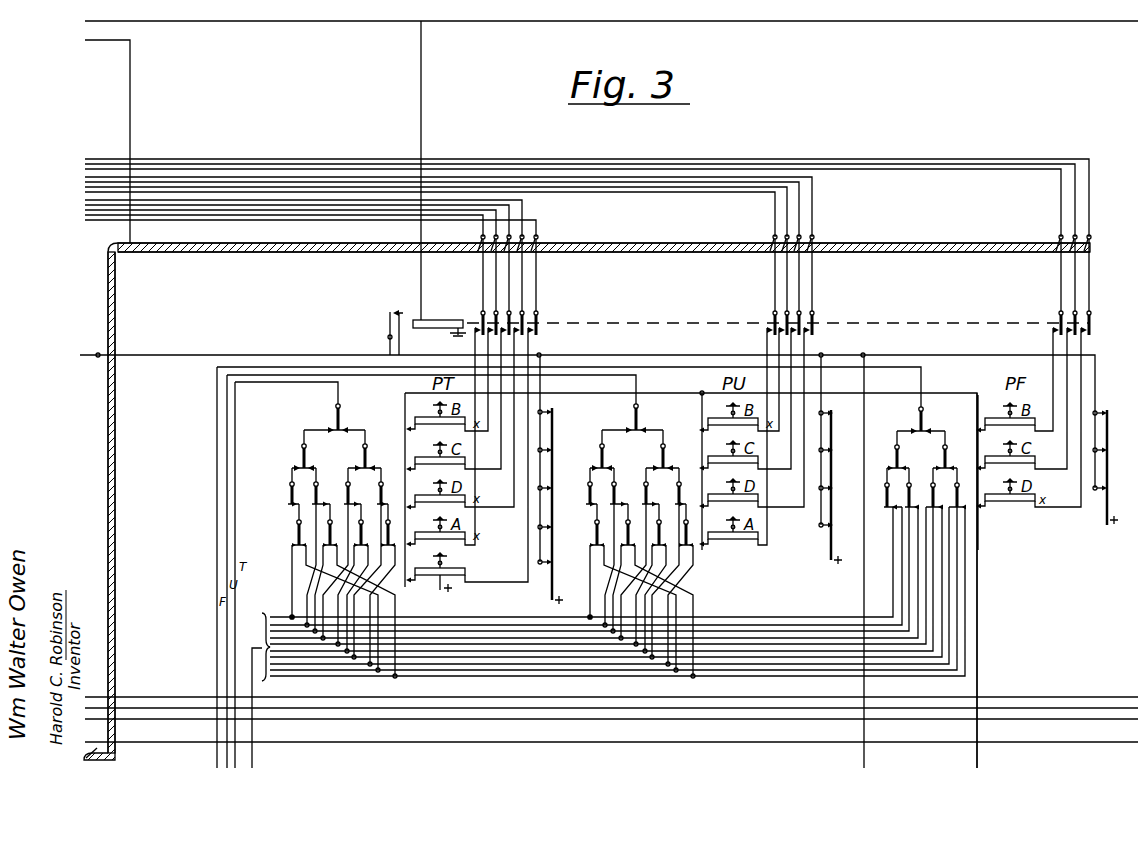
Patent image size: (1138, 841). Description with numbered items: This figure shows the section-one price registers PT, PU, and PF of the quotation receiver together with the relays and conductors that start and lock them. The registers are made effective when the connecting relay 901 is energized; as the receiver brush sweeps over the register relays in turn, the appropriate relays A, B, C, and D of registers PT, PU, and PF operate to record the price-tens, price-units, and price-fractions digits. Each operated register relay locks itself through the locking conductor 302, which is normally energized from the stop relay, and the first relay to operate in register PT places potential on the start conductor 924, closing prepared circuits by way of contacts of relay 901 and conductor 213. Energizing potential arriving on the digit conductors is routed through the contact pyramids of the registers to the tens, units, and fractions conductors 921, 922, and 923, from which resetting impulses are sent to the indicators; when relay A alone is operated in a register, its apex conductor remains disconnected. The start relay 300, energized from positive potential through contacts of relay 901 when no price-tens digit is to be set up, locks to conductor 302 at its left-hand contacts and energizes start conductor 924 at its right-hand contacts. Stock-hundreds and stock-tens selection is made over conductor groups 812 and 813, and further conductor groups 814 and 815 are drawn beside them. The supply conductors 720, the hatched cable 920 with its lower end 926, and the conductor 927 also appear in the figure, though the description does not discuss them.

The supply conductors 720 is at (127, 21).
The shielded cable sheath 920 is at (113, 330).
The connecting relay 901 is at (447, 314).
The conductor 213 is at (210, 355).
The start conductor 924 is at (686, 355).
The tens conductor 921 is at (235, 463).
The units conductor 922 is at (227, 482).
The fractions conductor 923 is at (217, 500).
The start relay 300 is at (437, 577).
The cable end 926 is at (112, 758).
The conductor 927 is at (252, 762).
The locking conductor 302 is at (977, 762).
The conductor group 812 is at (146, 697).
The conductor group 813 is at (172, 692).
The conductor 814 is at (201, 719).
The conductor 815 is at (180, 742).